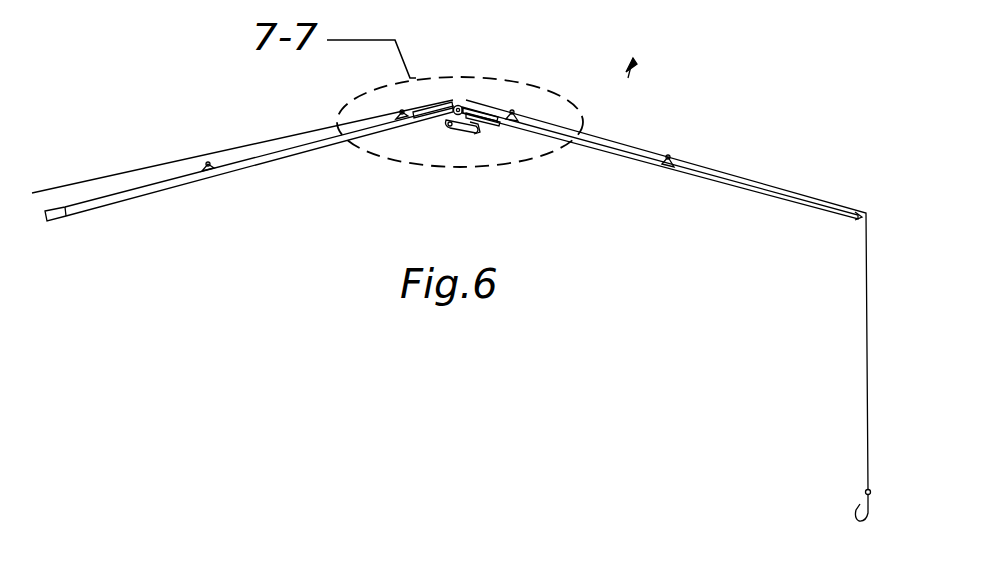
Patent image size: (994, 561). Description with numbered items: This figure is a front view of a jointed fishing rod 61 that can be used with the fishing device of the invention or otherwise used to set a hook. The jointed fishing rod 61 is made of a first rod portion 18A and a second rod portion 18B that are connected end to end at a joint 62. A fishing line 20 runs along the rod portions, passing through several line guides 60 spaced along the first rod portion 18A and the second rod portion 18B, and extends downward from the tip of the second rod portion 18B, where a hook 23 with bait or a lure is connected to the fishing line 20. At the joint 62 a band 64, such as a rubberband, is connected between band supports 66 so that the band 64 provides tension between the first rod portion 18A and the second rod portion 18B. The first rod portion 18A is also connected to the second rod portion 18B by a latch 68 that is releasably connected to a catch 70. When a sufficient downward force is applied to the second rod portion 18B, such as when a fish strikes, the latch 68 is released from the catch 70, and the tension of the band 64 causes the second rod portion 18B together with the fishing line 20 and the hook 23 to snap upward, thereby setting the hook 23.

The fishing line 20 is at (113, 177).
The first rod portion 18A is at (255, 166).
The second rod portion 18B is at (666, 170).
The line guide 60 is at (207, 166).
The jointed fishing rod 61 is at (634, 60).
The joint 62 is at (458, 105).
The band 64 is at (493, 108).
The band supports 66 is at (420, 123).
The latch 68 is at (465, 132).
The catch 70 is at (473, 128).
The hook 23 is at (864, 492).